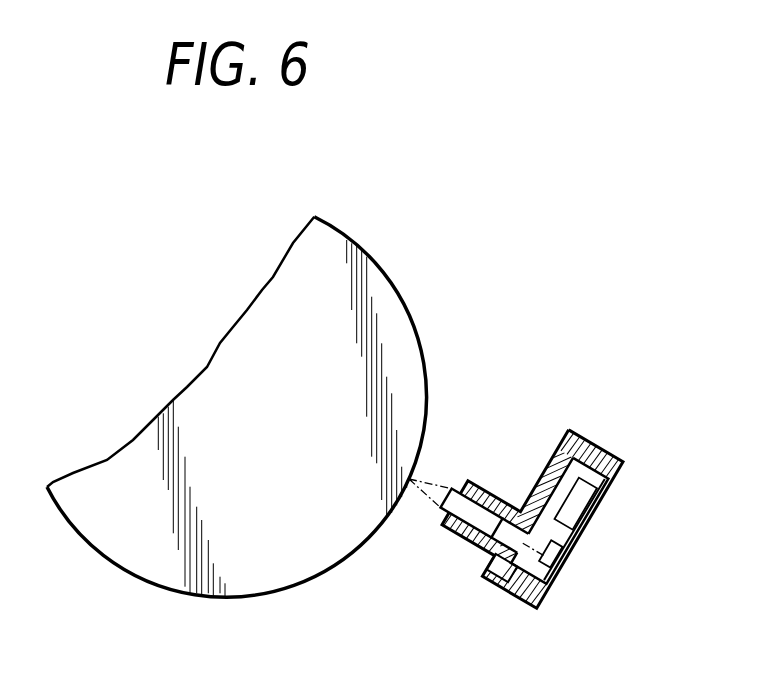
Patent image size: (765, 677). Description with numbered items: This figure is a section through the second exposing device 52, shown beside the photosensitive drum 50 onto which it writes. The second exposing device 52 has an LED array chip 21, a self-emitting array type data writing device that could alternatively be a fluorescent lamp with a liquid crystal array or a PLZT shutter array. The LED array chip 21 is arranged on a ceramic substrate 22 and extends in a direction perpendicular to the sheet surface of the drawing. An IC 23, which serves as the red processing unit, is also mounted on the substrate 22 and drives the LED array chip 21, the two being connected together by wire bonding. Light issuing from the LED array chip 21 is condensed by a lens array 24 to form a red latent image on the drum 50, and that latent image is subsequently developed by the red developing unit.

The drum 50 is at (388, 277).
The second exposing device 52 is at (523, 272).
The lens array 24 is at (467, 511).
The IC 23 is at (576, 490).
The LED array chip 21 is at (575, 537).
The ceramic substrate 22 is at (558, 572).